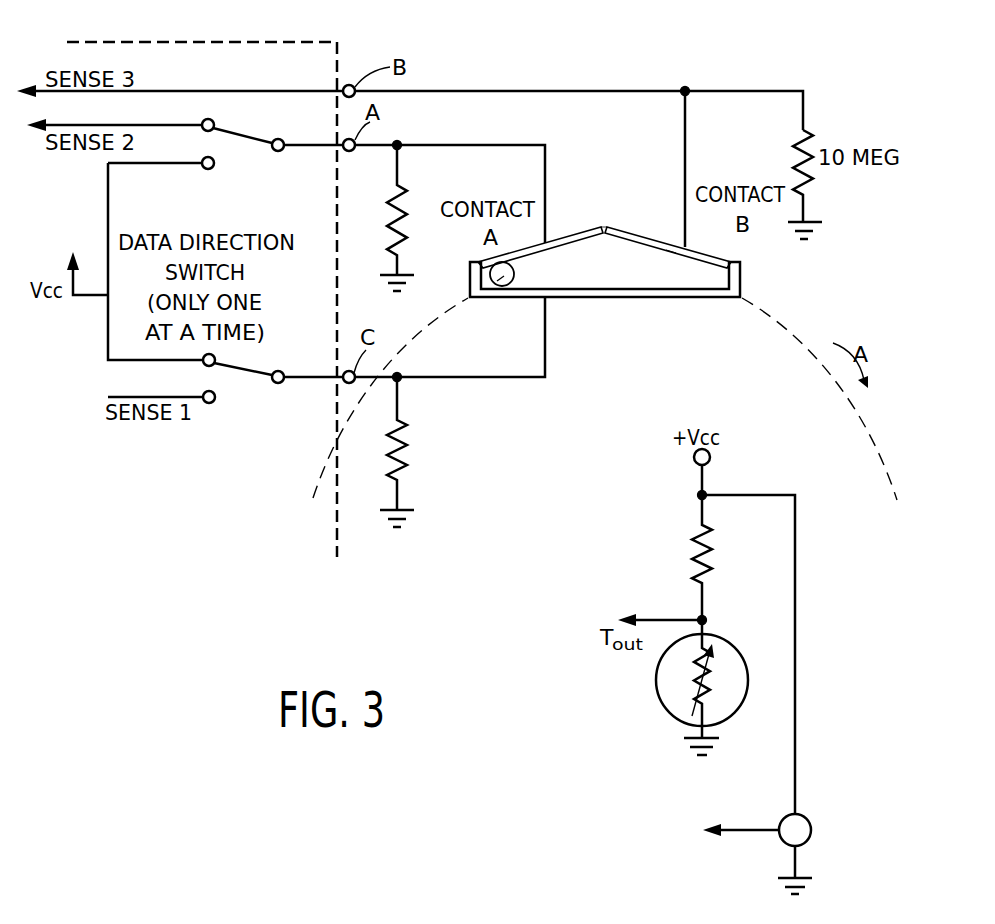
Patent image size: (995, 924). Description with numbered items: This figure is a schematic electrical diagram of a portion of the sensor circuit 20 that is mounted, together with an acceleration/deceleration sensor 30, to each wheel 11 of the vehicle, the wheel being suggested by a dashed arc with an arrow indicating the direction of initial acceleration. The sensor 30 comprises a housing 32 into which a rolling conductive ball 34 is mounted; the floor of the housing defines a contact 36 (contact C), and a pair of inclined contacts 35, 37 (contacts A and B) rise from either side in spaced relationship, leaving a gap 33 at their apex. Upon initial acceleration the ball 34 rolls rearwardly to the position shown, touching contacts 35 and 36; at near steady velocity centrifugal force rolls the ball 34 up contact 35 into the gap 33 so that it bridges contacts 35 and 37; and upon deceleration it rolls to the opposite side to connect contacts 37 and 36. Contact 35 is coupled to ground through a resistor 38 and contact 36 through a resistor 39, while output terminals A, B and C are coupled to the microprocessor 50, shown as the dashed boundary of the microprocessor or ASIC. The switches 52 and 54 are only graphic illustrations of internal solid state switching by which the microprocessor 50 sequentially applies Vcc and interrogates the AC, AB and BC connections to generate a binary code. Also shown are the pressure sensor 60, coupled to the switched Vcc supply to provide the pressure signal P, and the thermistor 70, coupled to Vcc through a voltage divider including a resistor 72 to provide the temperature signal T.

The sensor circuit 20 is at (690, 40).
The microprocessor 50 is at (352, 46).
The switch 52 is at (231, 134).
The switch 54 is at (245, 381).
The resistor 38 is at (404, 187).
The resistor 39 is at (406, 428).
The acceleration/deceleration sensor 30 is at (619, 280).
The inclined contact 35 is at (576, 232).
The housing 32 is at (657, 237).
The gap 33 is at (604, 226).
The rolling conductive ball 34 is at (514, 272).
The contact 36 is at (703, 298).
The inclined contact 37 is at (674, 251).
The wheel 11 is at (790, 323).
The resistor 72 is at (695, 552).
The thermistor 70 is at (744, 658).
The pressure sensor 60 is at (810, 818).